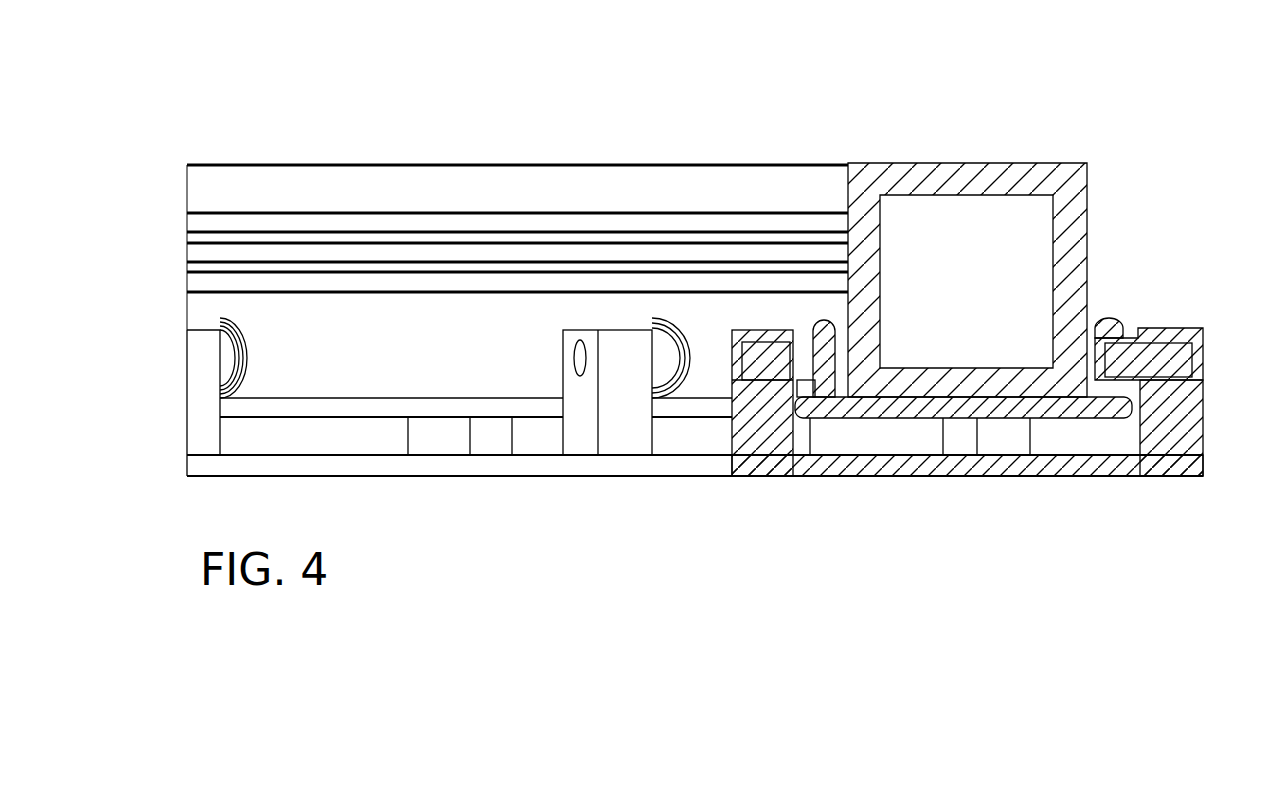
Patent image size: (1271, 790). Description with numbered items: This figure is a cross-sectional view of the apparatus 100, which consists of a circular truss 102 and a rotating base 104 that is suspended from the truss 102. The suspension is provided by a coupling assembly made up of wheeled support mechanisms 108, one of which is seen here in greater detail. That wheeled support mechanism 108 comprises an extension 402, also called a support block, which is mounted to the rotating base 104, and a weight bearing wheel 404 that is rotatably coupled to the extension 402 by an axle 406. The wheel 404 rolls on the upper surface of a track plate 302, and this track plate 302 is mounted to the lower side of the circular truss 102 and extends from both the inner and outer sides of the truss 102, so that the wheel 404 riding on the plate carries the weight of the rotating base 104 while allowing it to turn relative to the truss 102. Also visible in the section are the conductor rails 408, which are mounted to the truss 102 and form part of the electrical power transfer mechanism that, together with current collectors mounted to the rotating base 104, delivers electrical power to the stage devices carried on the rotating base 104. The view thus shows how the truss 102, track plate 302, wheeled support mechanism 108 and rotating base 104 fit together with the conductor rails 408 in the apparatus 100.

The apparatus 100 is at (603, 143).
The circular truss 102 is at (957, 180).
The rotating base 104 is at (983, 488).
The wheeled support mechanisms 108 is at (257, 352).
The track plate 302 is at (887, 420).
The extension 402 is at (1163, 410).
The weight bearing wheel 404 is at (1113, 320).
The axle 406 is at (1192, 358).
The conductor rails 408 is at (815, 258).